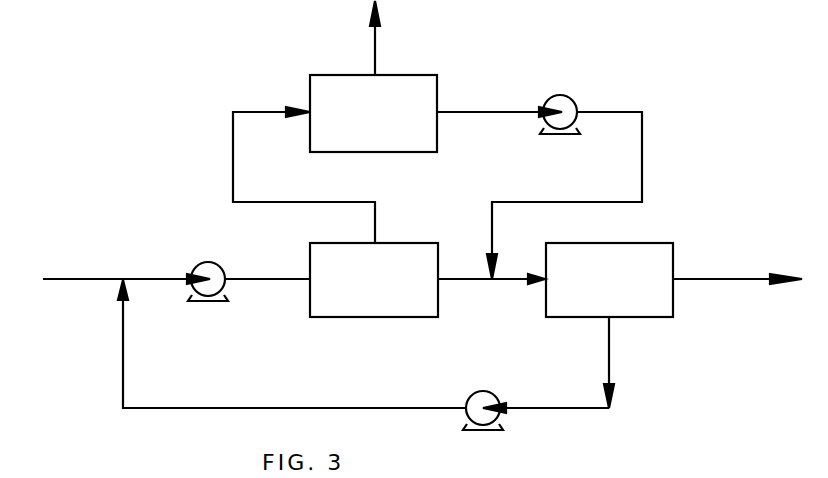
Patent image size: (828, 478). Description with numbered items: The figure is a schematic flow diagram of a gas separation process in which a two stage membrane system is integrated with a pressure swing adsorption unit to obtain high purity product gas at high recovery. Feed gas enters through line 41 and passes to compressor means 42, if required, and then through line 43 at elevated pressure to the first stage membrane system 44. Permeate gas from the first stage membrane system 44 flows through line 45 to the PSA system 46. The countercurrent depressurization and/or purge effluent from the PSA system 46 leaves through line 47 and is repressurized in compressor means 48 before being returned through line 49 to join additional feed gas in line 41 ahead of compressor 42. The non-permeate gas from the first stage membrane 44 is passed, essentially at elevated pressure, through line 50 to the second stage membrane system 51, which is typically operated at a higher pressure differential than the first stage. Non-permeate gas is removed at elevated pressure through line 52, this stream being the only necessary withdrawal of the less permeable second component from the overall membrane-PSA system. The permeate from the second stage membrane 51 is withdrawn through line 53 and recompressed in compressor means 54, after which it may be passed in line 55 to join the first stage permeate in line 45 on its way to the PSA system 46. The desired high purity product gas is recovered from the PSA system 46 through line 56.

The feed gas line 41 is at (75, 280).
The compressor means 42 is at (222, 291).
The line 43 is at (277, 279).
The first stage membrane system 44 is at (410, 243).
The permeate gas line 45 is at (458, 281).
The PSA system 46 is at (635, 243).
The PSA effluent line 47 is at (609, 350).
The compressor means 48 is at (470, 395).
The recycle line 49 is at (203, 408).
The non-permeate gas line 50 is at (233, 155).
The second stage membrane system 51 is at (337, 75).
The non-permeate gas withdrawal line 52 is at (399, 62).
The second stage permeate line 53 is at (467, 112).
The compressor means 54 is at (565, 95).
The recompressed permeate line 55 is at (492, 202).
The product gas line 56 is at (710, 279).